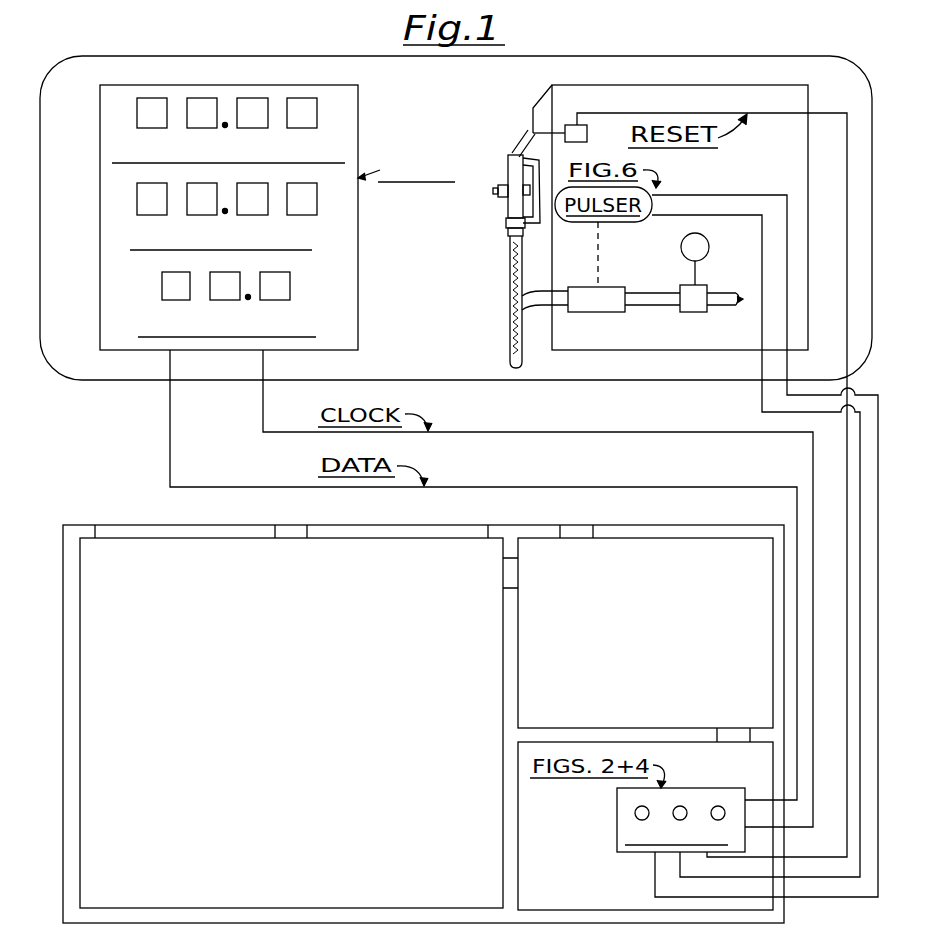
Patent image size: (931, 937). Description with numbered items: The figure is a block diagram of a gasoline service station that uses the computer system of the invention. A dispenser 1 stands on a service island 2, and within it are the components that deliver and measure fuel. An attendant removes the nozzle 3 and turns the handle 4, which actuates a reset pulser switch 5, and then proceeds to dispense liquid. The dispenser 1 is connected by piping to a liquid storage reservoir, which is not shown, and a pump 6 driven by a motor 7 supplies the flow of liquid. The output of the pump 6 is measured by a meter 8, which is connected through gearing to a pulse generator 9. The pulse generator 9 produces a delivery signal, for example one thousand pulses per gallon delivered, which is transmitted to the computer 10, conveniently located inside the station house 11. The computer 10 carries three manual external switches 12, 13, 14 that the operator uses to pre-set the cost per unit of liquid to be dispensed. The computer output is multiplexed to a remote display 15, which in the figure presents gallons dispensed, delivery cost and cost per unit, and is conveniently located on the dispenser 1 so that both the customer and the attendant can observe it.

The dispenser 1 is at (792, 175).
The service island 2 is at (596, 56).
The nozzle 3 is at (514, 150).
The handle 4 is at (530, 108).
The reset pulser switch 5 is at (574, 125).
The pump 6 is at (708, 283).
The motor 7 is at (709, 240).
The meter 8 is at (608, 287).
The pulse generator 9 is at (600, 225).
The computer 10 is at (637, 852).
The station house 11 is at (65, 772).
The manual external switch 12 is at (635, 811).
The manual external switch 13 is at (684, 806).
The manual external switch 14 is at (724, 806).
The remote display 15 is at (360, 212).